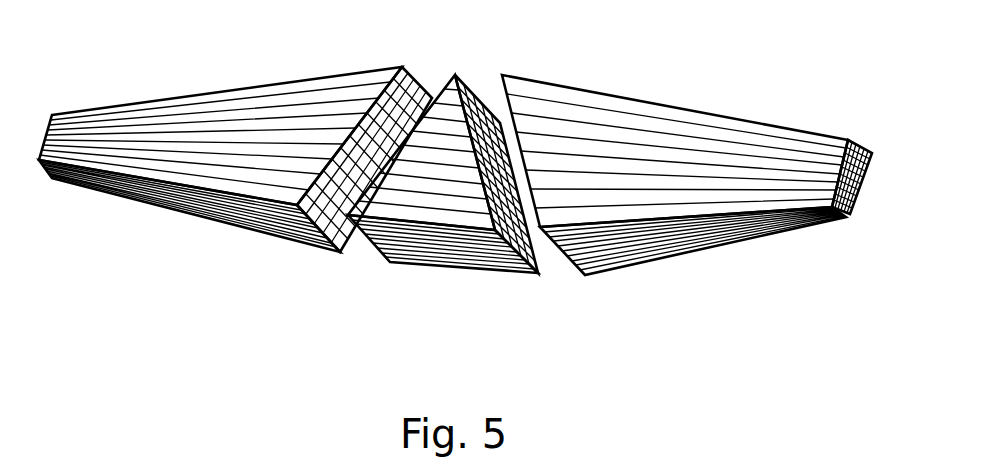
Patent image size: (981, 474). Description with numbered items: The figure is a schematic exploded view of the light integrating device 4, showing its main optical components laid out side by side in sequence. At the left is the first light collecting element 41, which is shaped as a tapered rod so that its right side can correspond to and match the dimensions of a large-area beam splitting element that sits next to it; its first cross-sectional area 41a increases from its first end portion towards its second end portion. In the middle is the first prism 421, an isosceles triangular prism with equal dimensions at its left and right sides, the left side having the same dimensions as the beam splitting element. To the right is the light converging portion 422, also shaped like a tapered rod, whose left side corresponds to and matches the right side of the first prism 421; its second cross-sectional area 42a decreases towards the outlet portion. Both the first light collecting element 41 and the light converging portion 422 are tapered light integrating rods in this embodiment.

The light integrating device 4 is at (457, 35).
The first light collecting element 41 is at (235, 189).
The first cross-sectional area 41a is at (340, 234).
The first prism 421 is at (468, 273).
The light converging portion 422 is at (708, 190).
The second cross-sectional area 42a is at (855, 198).